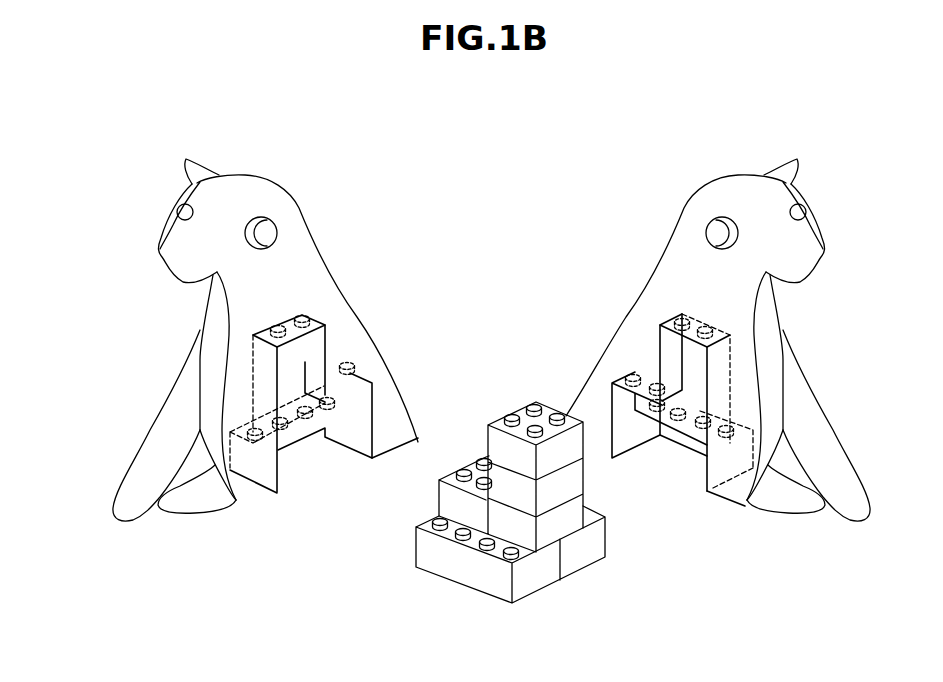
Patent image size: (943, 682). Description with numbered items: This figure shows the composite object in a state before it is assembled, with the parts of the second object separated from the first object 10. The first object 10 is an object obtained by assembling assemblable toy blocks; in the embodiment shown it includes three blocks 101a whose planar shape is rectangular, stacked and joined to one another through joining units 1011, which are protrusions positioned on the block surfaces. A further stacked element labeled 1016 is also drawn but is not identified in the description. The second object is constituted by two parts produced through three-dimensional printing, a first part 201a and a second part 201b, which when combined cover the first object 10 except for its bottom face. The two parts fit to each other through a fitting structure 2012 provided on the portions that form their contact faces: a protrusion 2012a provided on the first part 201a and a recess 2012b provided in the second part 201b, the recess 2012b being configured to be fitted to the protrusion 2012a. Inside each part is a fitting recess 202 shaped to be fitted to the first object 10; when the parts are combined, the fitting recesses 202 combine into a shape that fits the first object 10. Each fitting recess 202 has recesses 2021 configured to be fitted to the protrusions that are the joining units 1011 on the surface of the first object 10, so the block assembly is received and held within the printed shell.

The first object 10 is at (509, 494).
The block 101a is at (421, 541).
The joining unit 1011 is at (514, 412).
The block 1016 is at (500, 446).
The first part 201a is at (213, 313).
The second part 201b is at (798, 191).
The fitting structure 2012 is at (491, 175).
The protrusion 2012a is at (277, 230).
The recess 2012b is at (707, 232).
The fitting recess 202 is at (354, 432).
The recess 2021 is at (282, 325).